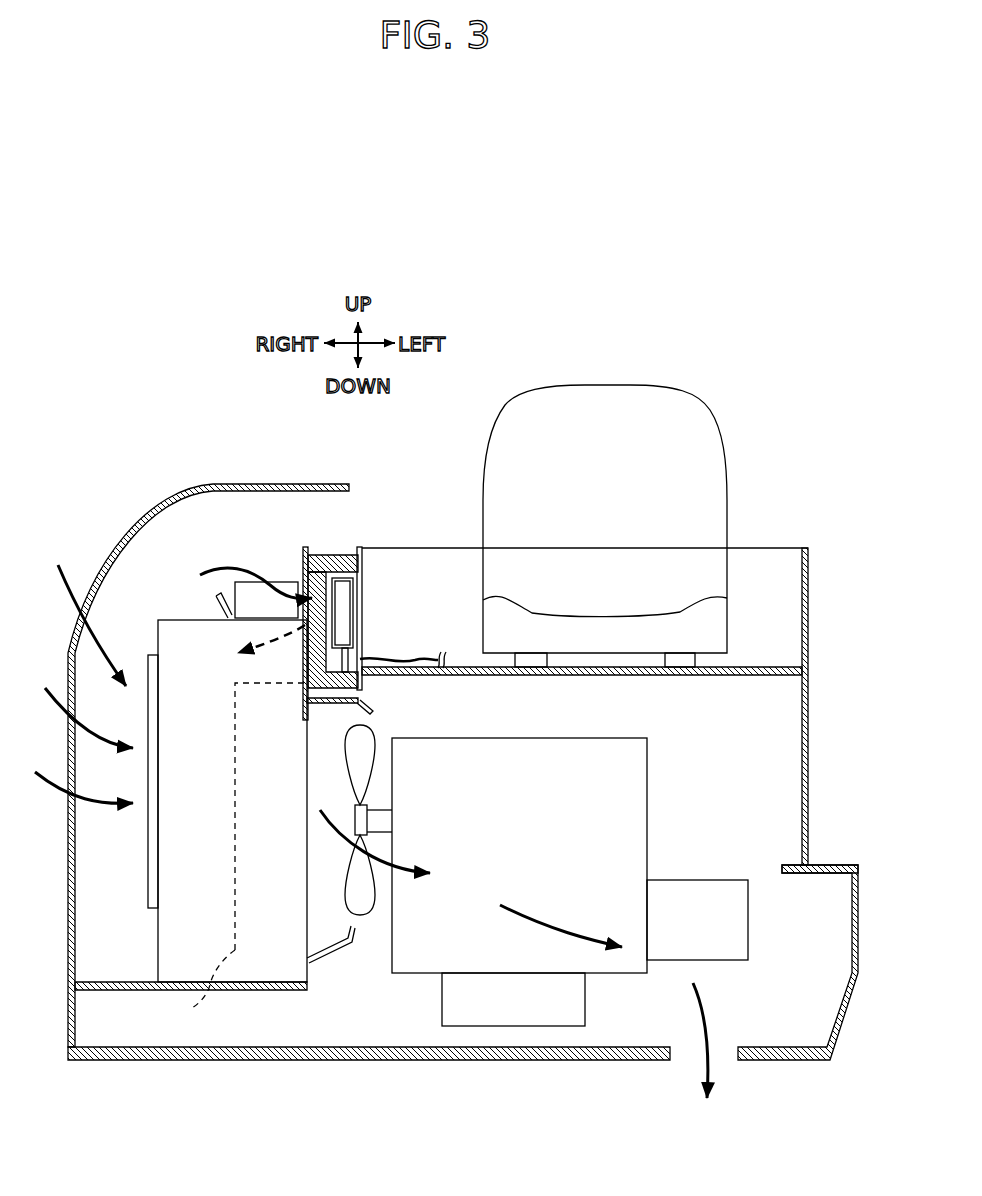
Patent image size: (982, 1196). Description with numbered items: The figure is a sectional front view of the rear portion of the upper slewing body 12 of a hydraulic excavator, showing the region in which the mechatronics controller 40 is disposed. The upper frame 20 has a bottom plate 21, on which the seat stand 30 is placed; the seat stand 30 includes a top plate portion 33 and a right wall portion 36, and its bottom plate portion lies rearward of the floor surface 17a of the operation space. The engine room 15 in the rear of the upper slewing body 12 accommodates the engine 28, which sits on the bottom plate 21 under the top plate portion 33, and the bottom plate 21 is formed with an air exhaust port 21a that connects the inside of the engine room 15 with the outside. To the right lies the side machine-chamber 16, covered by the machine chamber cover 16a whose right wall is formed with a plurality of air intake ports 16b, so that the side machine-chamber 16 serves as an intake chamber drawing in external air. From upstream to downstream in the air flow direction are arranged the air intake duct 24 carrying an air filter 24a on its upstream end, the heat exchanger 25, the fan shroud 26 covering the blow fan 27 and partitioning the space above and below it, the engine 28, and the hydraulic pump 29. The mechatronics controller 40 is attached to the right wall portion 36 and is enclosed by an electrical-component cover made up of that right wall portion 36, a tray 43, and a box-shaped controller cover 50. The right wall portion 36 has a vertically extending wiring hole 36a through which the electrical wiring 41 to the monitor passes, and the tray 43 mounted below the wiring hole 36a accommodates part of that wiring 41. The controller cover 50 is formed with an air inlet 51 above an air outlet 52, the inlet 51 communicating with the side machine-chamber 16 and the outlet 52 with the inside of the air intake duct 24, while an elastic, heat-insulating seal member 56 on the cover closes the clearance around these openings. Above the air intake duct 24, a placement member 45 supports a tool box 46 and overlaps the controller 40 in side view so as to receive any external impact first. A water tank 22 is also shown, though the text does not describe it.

The upper slewing body 12 is at (433, 773).
The engine room 15 is at (778, 769).
The side machine-chamber 16 is at (175, 765).
The machine chamber cover 16a is at (110, 561).
The air intake ports 16b is at (70, 632).
The floor surface 17a is at (826, 865).
The upper frame 20 is at (590, 1064).
The bottom plate 21 is at (428, 1062).
The air exhaust port 21a is at (735, 1062).
The water tank 22 is at (612, 385).
The air intake duct 24 is at (158, 946).
The air filter 24a is at (150, 851).
The heat exchanger 25 is at (194, 988).
The fan shroud 26 is at (364, 704).
The blow fan 27 is at (362, 926).
The engine 28 is at (647, 781).
The hydraulic pump 29 is at (697, 880).
The seat stand 30 is at (808, 544).
The top plate portion 33 is at (762, 667).
The right wall portion 36 is at (362, 561).
The wiring hole 36a is at (358, 653).
The mechatronics controller 40 is at (352, 599).
The electrical wiring 41 is at (436, 663).
The tray 43 is at (307, 689).
The placement member 45 is at (216, 599).
The tool box 46 is at (272, 582).
The controller cover 50 is at (352, 568).
The air inlet 51 is at (313, 555).
The air outlet 52 is at (307, 653).
The seal member 56 is at (348, 555).